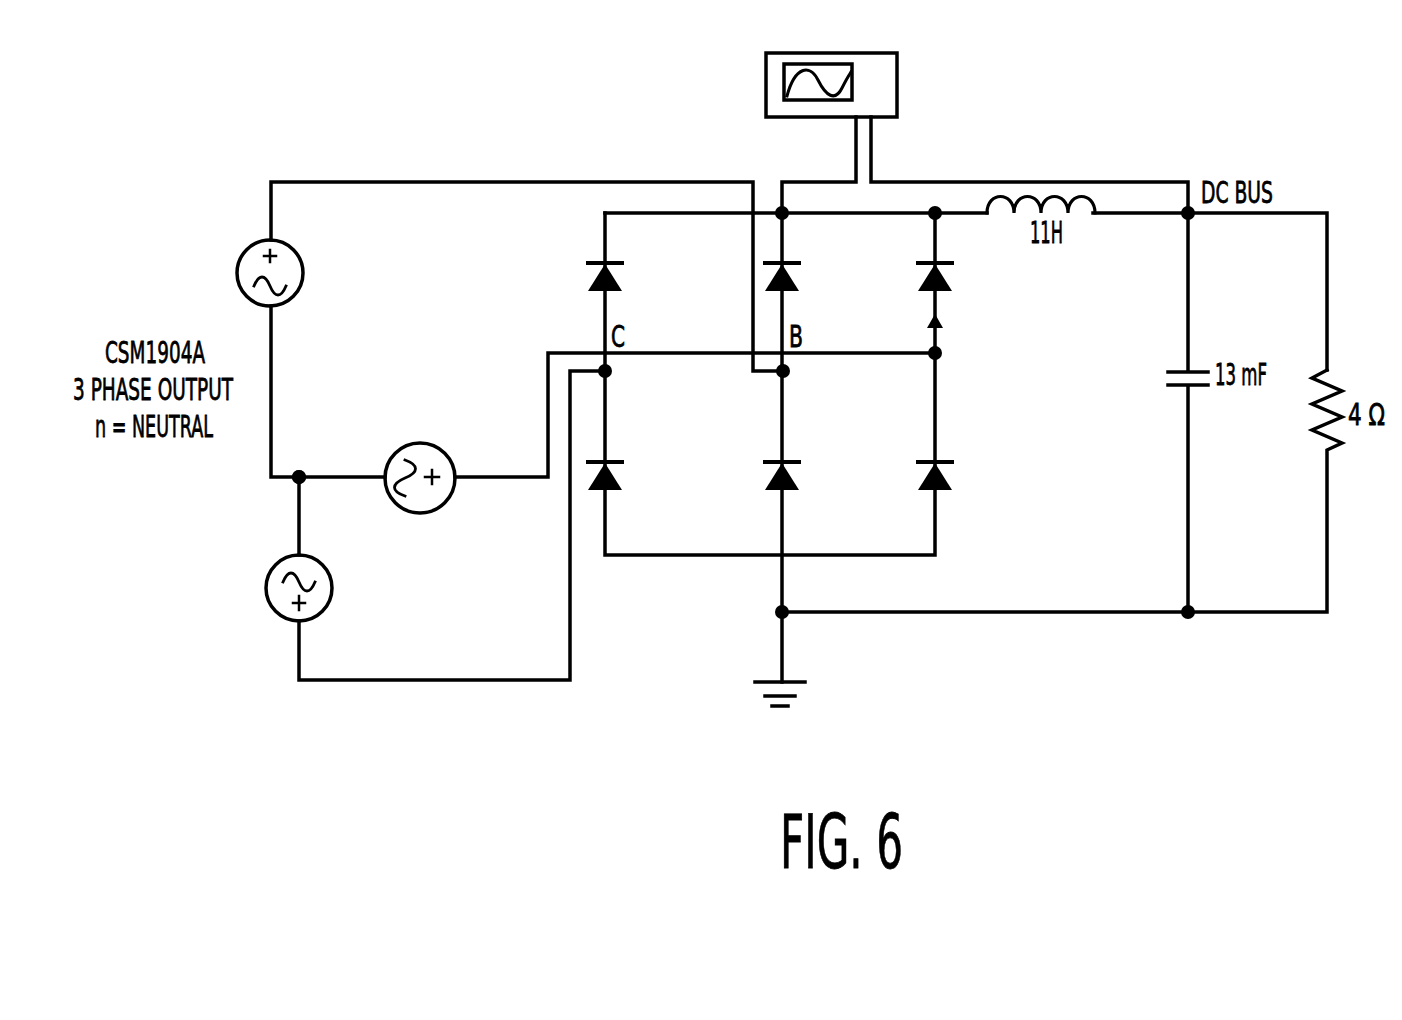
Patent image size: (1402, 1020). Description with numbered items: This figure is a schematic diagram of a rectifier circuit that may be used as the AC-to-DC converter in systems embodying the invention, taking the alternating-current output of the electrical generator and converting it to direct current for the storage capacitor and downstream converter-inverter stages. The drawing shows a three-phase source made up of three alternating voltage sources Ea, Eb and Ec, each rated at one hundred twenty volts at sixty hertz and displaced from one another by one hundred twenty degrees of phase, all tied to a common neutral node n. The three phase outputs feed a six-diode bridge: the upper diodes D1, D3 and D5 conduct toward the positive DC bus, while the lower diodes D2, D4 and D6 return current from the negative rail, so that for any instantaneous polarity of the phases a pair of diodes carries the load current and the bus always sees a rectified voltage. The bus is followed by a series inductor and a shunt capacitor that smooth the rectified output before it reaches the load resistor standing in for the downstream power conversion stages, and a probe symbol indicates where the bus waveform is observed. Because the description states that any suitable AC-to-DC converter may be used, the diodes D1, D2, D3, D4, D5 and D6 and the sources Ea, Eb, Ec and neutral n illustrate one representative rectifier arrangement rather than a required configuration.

The diode D1 is at (980, 271).
The diode D2 is at (826, 476).
The diode D3 is at (650, 271).
The diode D4 is at (980, 476).
The diode D5 is at (826, 271).
The diode D6 is at (650, 476).
The phase a AC voltage source Ea is at (427, 438).
The phase b AC voltage source Eb is at (381, 268).
The phase c AC voltage source Ec is at (387, 605).
The neutral node n is at (299, 459).